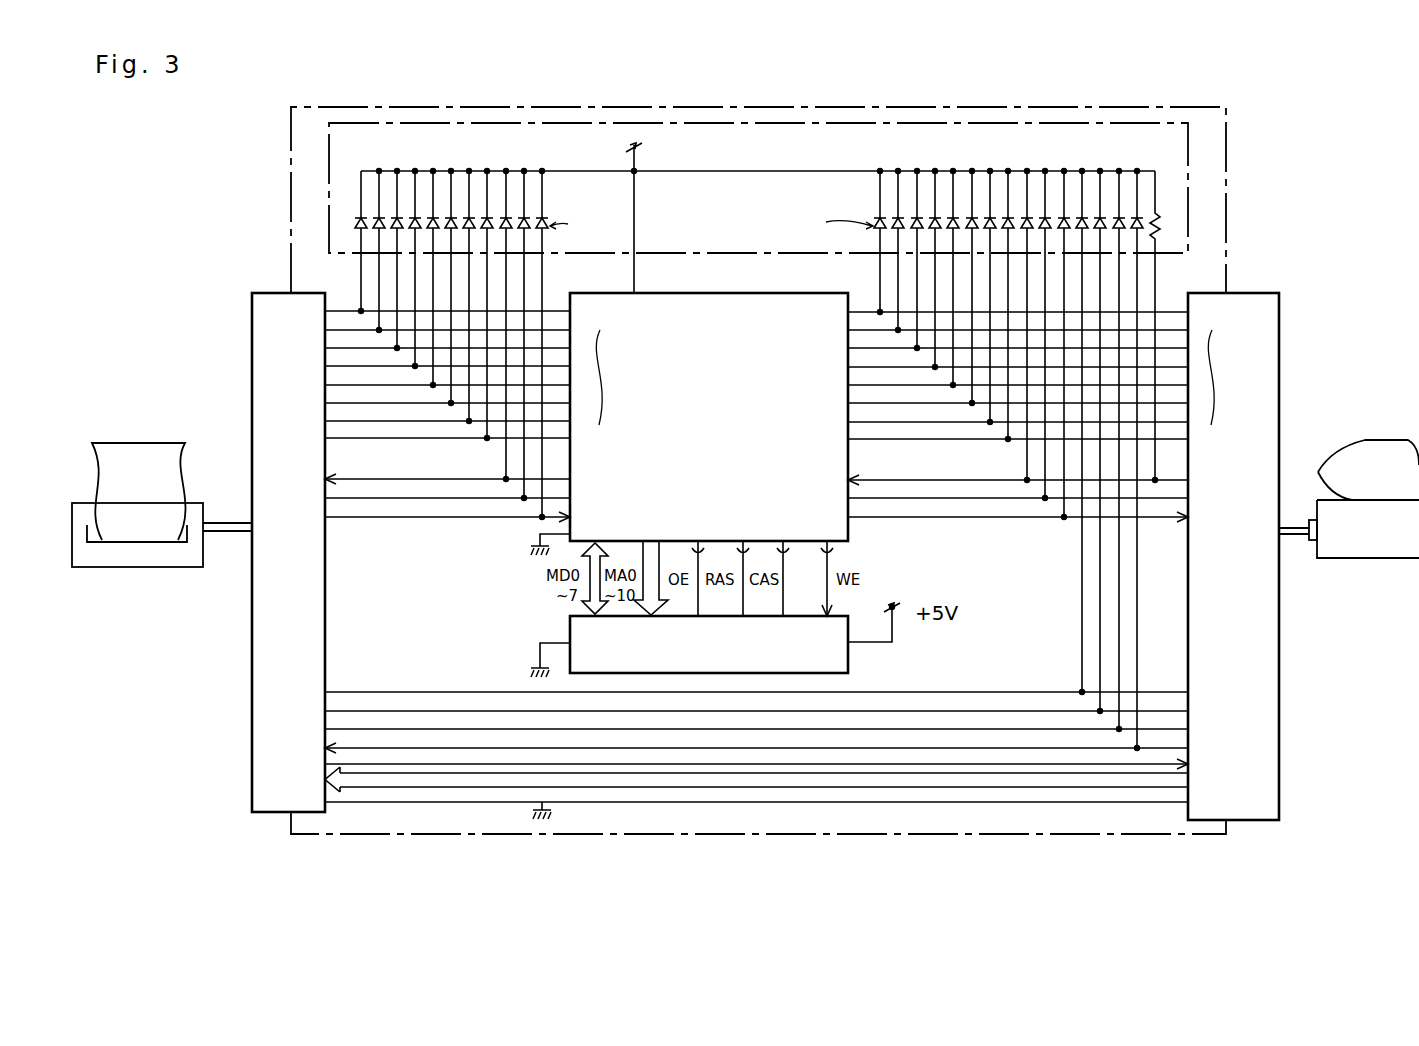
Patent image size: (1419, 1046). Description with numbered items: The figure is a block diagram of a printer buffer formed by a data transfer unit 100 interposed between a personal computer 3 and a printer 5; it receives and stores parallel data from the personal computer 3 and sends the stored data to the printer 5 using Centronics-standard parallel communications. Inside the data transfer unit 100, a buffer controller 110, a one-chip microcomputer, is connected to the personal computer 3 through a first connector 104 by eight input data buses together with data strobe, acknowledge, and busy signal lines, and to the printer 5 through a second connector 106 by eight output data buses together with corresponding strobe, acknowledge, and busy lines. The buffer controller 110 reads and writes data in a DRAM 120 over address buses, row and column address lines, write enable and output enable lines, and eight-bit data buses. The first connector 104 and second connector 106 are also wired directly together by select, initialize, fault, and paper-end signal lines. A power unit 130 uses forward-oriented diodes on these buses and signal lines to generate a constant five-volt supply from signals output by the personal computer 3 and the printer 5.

The data transfer unit 100 is at (1130, 107).
The power unit 130 is at (1192, 158).
The second connector 106 is at (268, 293).
The first connector 104 is at (1250, 293).
The buffer controller 110 is at (757, 293).
The DRAM 120 is at (570, 629).
The printer 5 is at (177, 568).
The personal computer 3 is at (1397, 558).